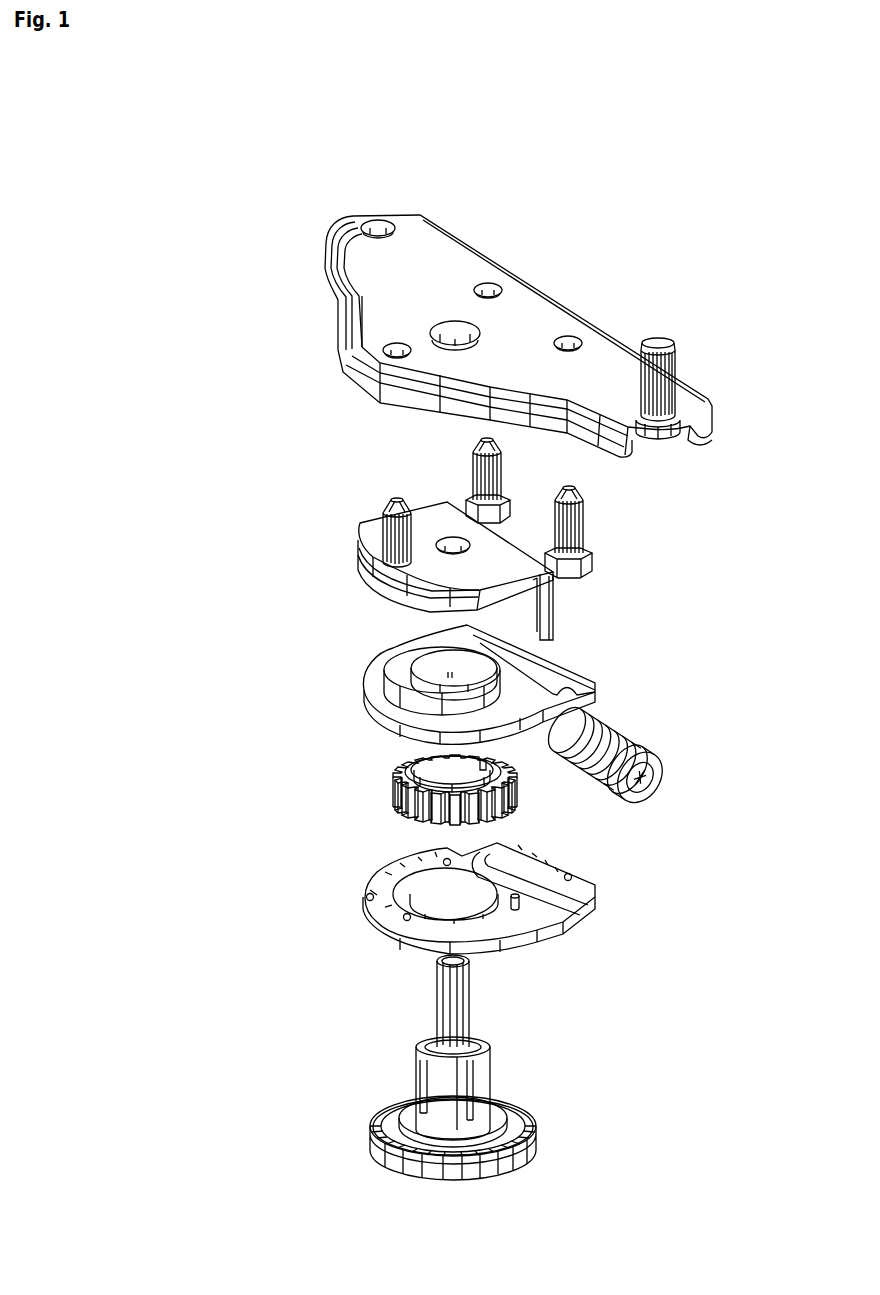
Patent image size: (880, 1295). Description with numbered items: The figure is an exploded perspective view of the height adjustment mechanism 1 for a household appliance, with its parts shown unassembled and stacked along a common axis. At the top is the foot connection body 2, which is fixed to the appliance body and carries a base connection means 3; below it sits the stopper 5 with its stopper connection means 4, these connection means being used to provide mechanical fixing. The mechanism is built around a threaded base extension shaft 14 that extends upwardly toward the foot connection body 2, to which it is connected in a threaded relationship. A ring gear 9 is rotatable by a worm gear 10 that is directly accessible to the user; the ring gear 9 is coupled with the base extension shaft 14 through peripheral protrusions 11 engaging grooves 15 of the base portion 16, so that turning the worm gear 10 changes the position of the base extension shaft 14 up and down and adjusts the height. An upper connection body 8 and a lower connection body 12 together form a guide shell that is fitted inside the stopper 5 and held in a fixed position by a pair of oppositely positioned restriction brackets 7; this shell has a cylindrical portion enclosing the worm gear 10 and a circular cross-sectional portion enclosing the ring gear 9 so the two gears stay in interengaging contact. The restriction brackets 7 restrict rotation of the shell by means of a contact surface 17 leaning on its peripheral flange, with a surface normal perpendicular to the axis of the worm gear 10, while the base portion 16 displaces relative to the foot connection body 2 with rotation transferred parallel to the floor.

The height adjustment mechanism 1 is at (390, 160).
The foot connection body 2 is at (373, 314).
The base connection means 3 is at (664, 343).
The stopper connection means 4 is at (396, 502).
The stopper 5 is at (356, 550).
The restriction brackets 7 is at (556, 613).
The upper connection body 8 is at (372, 682).
The ring gear 9 is at (419, 774).
The worm gear 10 is at (630, 745).
The protrusions 11 is at (486, 765).
The lower connection body 12 is at (364, 894).
The base extension shaft 14 is at (472, 1012).
The grooves 15 is at (415, 1060).
The base portion 16 is at (373, 1138).
The contact surface 17 is at (543, 612).